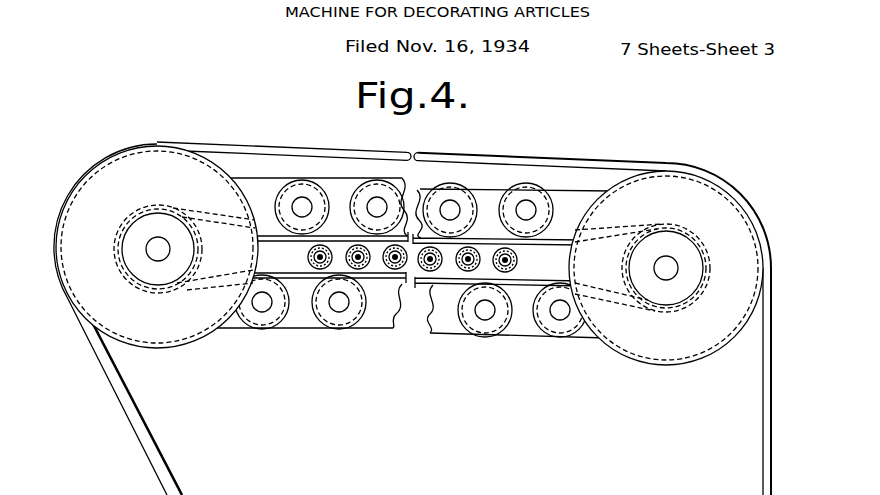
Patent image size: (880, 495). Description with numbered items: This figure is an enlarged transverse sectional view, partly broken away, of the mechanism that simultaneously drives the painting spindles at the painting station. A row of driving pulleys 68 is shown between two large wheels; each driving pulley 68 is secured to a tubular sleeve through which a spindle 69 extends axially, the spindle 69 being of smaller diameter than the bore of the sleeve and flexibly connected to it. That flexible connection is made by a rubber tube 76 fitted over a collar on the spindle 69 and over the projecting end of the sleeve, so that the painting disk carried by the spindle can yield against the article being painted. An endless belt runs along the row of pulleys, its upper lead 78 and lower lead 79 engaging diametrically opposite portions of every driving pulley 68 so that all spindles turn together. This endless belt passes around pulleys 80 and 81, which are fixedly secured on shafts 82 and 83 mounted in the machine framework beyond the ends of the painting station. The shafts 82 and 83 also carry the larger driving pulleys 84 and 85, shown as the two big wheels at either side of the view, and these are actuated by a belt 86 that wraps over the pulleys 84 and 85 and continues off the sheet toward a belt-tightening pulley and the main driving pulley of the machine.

The driving pulley 68 is at (307, 250).
The spindle 69 is at (318, 263).
The rubber tube 76 is at (321, 262).
The upper lead of endless belt 78 is at (335, 236).
The lower lead of endless belt 79 is at (430, 283).
The pulley 80 is at (128, 220).
The pulley 81 is at (704, 245).
The shaft 82 is at (146, 246).
The shaft 83 is at (678, 272).
The driving pulley 84 is at (97, 188).
The driving pulley 85 is at (733, 212).
The belt 86 is at (406, 150).